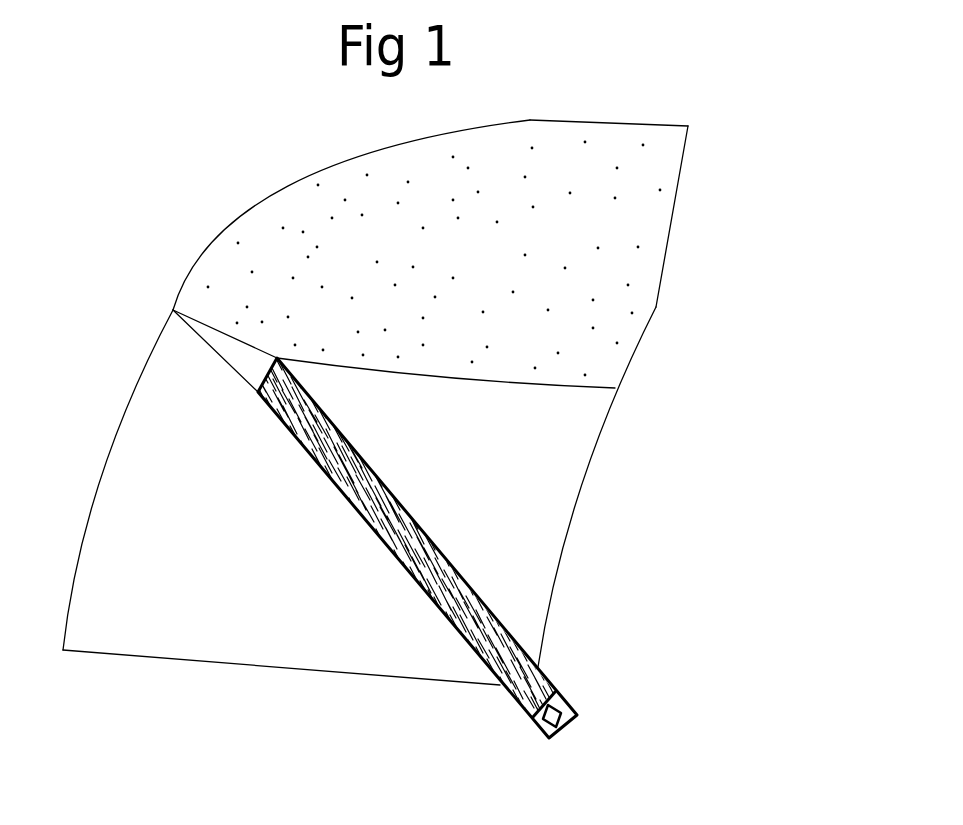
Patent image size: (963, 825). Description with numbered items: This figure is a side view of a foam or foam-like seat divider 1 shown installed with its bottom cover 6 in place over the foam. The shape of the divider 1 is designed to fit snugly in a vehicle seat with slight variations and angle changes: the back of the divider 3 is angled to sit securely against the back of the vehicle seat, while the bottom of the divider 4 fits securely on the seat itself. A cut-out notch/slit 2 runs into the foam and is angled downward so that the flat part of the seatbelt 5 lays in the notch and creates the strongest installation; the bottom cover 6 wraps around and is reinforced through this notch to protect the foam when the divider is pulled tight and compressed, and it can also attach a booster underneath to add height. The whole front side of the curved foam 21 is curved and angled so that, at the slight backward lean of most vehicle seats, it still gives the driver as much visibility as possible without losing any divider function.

The divider 1 is at (436, 280).
The notch/slit 2 is at (255, 361).
The back of the divider 3 is at (592, 448).
The bottom of the divider 4 is at (385, 673).
The seatbelt 5 is at (334, 476).
The bottom cover 6 is at (432, 480).
The curved foam front side 21 is at (533, 120).